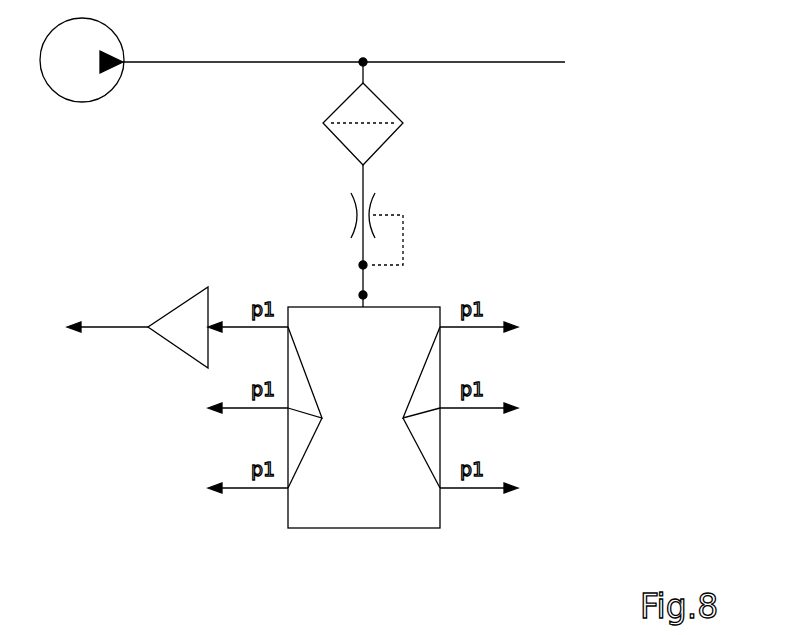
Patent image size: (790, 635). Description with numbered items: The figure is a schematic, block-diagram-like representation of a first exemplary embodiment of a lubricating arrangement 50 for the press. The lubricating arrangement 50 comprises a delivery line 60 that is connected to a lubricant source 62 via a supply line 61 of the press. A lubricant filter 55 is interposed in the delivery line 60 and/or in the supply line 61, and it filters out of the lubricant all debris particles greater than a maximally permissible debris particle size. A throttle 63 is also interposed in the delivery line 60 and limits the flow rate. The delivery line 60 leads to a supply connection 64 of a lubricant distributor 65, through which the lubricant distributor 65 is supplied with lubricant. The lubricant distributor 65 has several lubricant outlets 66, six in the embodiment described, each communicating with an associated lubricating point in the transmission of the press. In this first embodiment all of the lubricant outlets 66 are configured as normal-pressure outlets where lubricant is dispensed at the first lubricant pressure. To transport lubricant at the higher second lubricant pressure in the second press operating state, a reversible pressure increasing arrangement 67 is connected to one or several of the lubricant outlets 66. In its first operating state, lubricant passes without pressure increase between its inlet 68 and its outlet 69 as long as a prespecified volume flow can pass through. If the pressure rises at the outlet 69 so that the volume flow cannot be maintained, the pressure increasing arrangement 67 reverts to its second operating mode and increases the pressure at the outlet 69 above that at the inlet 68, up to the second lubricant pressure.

The lubricating arrangement 50 is at (610, 110).
The lubricant filter 55 is at (387, 103).
The delivery line 60 is at (358, 67).
The supply line 61 is at (502, 63).
The lubricant source 62 is at (122, 72).
The throttle 63 is at (343, 215).
The supply connection 64 is at (363, 307).
The lubricant distributor 65 is at (375, 515).
The lubricant outlets 66 is at (364, 407).
The pressure increasing arrangement 67 is at (192, 315).
The inlet 68 is at (212, 325).
The outlet 69 is at (147, 325).